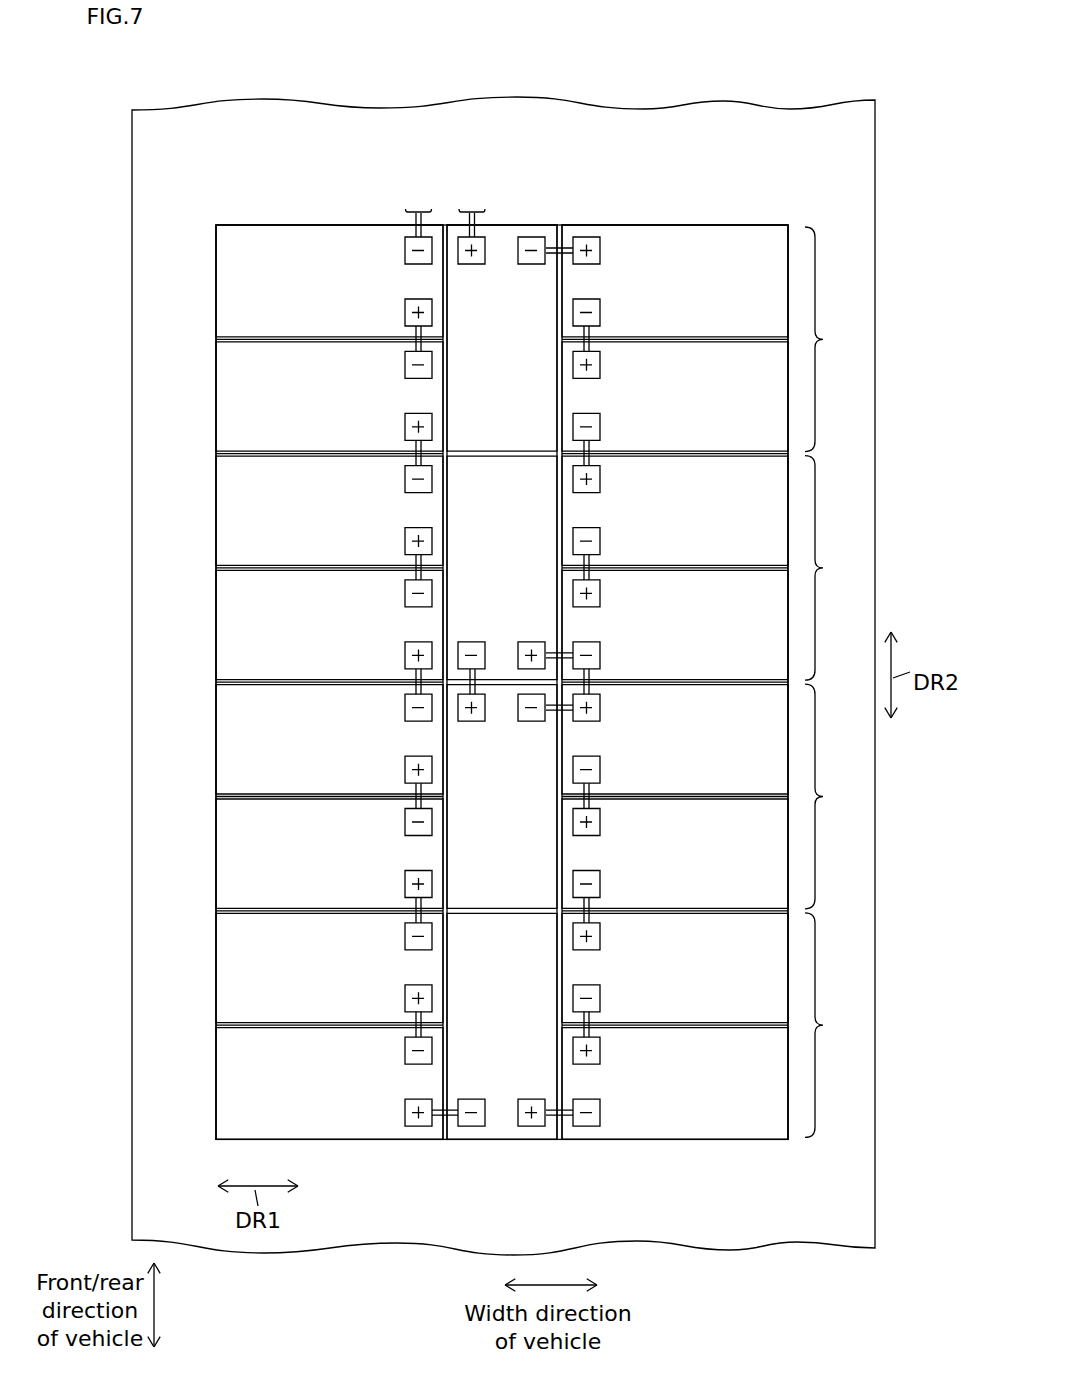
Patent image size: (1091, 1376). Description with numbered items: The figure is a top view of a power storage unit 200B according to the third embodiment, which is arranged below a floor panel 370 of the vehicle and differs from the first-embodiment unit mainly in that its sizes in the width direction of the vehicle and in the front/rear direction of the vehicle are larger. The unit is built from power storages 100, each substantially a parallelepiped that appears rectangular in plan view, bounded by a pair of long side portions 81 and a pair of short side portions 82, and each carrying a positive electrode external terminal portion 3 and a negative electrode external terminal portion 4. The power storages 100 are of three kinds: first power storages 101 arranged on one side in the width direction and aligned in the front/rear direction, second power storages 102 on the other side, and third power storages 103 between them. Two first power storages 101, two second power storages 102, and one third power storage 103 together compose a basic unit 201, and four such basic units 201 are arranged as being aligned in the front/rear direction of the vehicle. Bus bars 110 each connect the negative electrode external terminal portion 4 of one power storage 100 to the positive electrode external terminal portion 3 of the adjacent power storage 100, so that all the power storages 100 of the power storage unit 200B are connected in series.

The positive electrode external terminal portion 3 is at (405, 315).
The negative electrode external terminal portion 4 is at (405, 252).
The long side portion 81 is at (285, 225).
The short side portion 82 is at (216, 284).
The power storage 100 is at (502, 683).
The first power storage 101 is at (333, 1192).
The second power storage 102 is at (713, 1192).
The third power storage 103 is at (538, 1192).
The bus bar 110 is at (445, 344).
The power storage unit 200B is at (763, 207).
The basic unit 201 is at (834, 682).
The floor panel 370 is at (878, 1088).